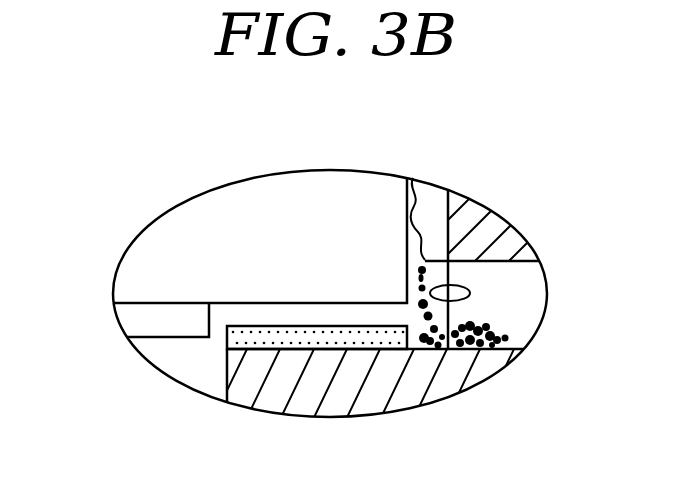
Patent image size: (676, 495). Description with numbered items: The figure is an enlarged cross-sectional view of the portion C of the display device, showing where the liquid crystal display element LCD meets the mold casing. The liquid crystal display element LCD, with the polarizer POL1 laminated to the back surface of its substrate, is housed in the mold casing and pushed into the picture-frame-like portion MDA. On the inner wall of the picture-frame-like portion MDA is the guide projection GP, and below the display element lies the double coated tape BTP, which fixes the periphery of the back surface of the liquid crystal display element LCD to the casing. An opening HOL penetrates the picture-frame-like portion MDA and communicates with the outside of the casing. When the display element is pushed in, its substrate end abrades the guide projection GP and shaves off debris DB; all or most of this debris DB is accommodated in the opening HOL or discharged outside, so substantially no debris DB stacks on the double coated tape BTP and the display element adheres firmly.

The portion C is at (243, 178).
The liquid crystal display element LCD is at (142, 262).
The polarizer POL1 is at (155, 328).
The double coated tape BTP is at (333, 336).
The guide projection GP is at (432, 210).
The picture-frame-like portion MDA is at (490, 225).
The opening HOL is at (472, 288).
The debris DB is at (432, 340).